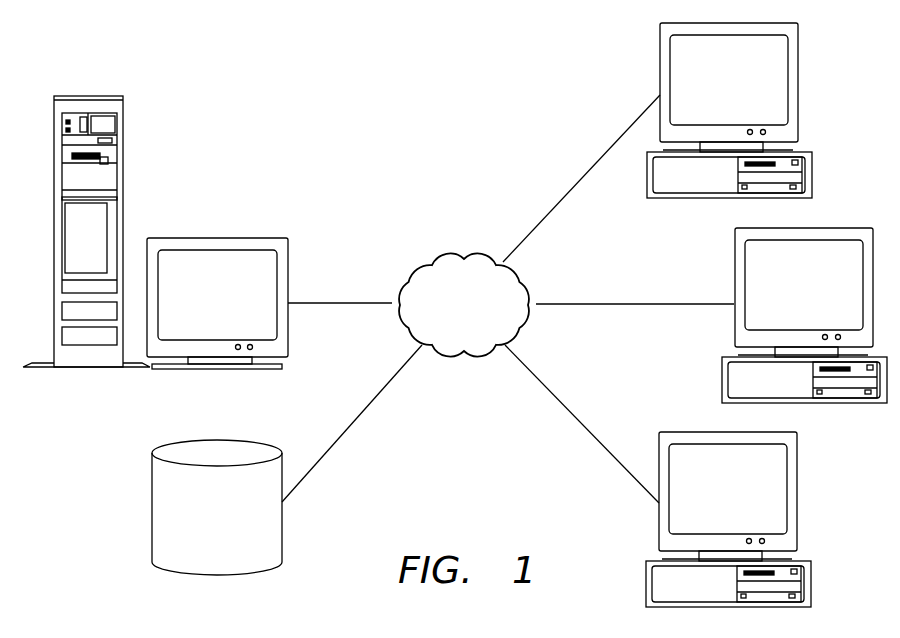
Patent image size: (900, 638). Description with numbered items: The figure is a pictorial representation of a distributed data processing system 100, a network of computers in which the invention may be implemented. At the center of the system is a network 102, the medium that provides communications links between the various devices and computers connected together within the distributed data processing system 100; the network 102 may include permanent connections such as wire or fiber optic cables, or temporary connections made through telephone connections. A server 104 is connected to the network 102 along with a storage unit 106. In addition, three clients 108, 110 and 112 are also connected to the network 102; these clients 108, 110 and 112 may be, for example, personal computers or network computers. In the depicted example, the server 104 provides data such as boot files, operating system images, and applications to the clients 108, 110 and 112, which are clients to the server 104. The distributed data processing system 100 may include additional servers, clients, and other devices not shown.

The distributed data processing system 100 is at (243, 73).
The network 102 is at (443, 334).
The server 104 is at (198, 306).
The storage unit 106 is at (238, 549).
The client 108 is at (709, 94).
The client 110 is at (804, 328).
The client 112 is at (728, 532).